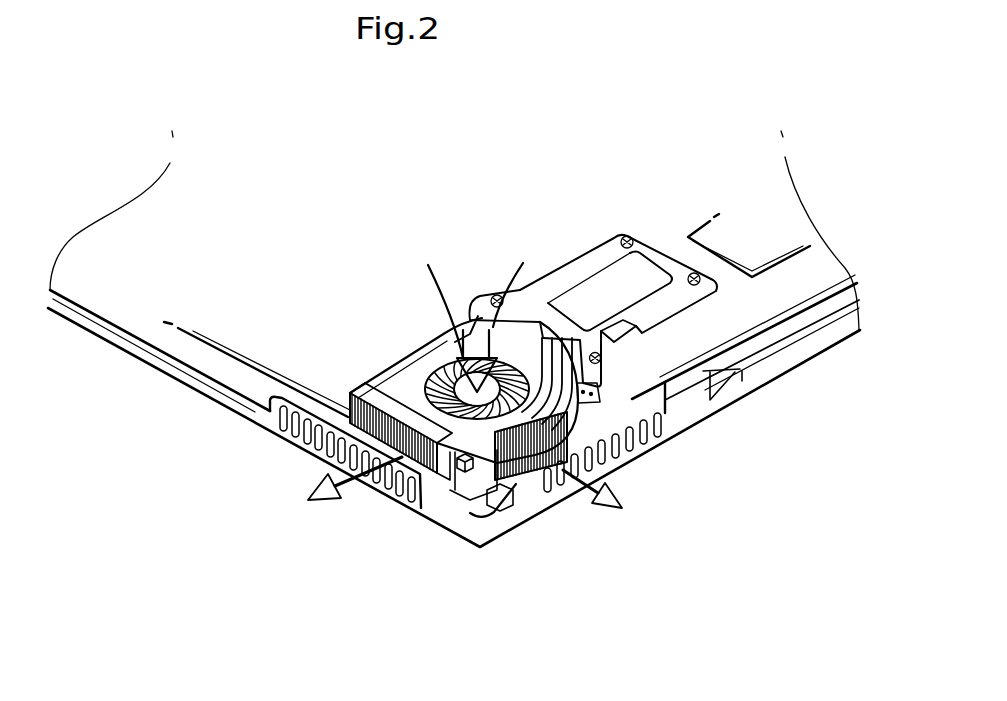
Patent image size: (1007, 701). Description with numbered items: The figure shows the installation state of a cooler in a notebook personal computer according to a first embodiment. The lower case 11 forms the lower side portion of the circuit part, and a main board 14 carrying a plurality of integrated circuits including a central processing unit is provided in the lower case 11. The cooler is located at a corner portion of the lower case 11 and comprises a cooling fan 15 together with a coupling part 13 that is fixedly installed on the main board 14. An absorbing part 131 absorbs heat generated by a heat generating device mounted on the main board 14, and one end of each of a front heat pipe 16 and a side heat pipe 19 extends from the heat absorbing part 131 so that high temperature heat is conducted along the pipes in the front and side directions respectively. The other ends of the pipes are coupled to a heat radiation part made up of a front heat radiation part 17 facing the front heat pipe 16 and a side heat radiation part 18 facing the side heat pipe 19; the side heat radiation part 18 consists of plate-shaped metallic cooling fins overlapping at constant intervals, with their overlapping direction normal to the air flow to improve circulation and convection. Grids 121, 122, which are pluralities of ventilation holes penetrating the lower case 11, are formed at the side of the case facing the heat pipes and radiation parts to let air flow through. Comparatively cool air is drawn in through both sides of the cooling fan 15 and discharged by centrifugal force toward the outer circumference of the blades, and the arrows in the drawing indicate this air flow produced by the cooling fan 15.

The lower case 11 is at (793, 350).
The coupling part 13 is at (578, 265).
The absorbing part 131 is at (633, 273).
The main board 14 is at (225, 354).
The cooling fan 15 is at (423, 393).
The front heat pipe 16 is at (352, 390).
The front heat radiation part 17 is at (365, 422).
The side heat radiation part 18 is at (519, 482).
The side heat pipe 19 is at (573, 387).
The grid 121 is at (397, 503).
The grid 122 is at (640, 444).